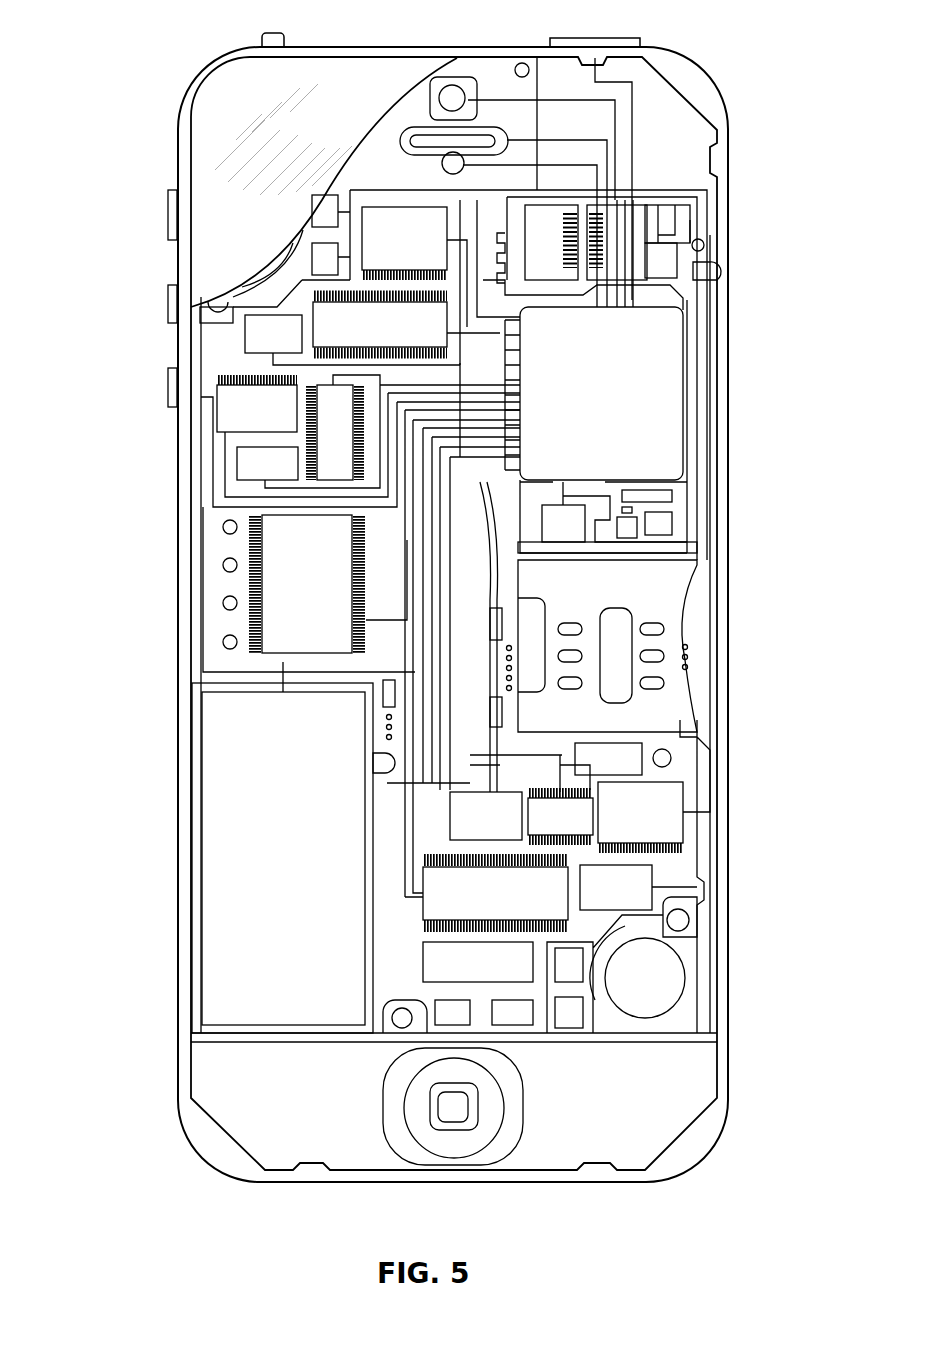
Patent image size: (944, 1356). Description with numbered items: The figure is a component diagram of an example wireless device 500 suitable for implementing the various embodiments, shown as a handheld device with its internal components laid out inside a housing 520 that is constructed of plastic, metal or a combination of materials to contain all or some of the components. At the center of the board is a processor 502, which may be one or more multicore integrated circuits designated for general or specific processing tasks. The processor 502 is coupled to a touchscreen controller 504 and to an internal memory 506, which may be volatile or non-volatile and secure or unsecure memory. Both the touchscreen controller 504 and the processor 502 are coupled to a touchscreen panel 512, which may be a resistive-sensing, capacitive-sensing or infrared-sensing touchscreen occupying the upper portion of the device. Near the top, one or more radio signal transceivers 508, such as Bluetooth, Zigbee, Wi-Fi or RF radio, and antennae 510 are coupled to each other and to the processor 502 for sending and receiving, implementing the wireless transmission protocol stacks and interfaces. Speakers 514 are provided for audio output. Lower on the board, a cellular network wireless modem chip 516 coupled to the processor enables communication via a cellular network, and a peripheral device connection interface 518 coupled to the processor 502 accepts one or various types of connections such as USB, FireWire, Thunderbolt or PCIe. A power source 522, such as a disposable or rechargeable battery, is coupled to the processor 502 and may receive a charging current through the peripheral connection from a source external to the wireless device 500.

The wireless device 500 is at (150, 82).
The processor 502 is at (601, 393).
The touchscreen controller 504 is at (404, 241).
The internal memory 506 is at (380, 324).
The radio signal transceivers 508 is at (632, 222).
The antennae 510 is at (677, 262).
The touchscreen panel 512 is at (205, 150).
The speakers 514 is at (417, 127).
The cellular network wireless modem chip 516 is at (495, 893).
The peripheral device connection interface 518 is at (478, 962).
The housing 520 is at (728, 1049).
The power source 522 is at (282, 858).